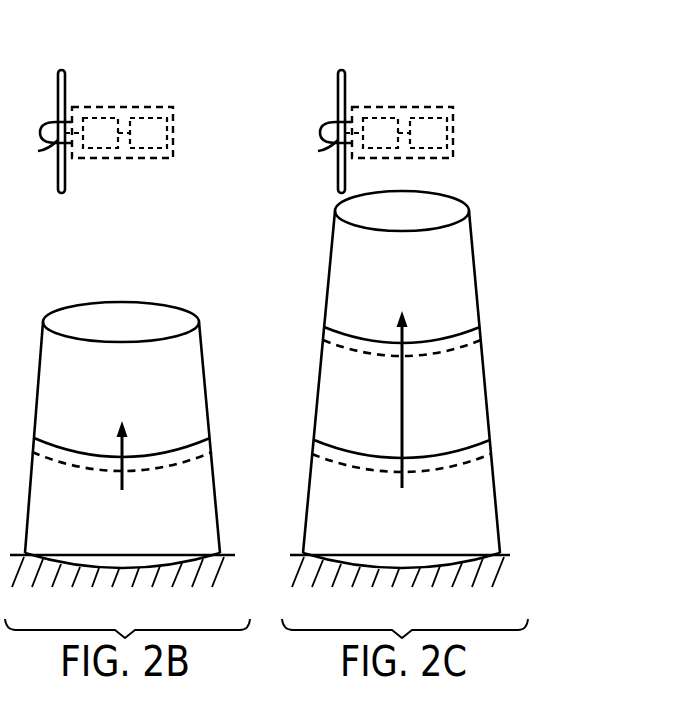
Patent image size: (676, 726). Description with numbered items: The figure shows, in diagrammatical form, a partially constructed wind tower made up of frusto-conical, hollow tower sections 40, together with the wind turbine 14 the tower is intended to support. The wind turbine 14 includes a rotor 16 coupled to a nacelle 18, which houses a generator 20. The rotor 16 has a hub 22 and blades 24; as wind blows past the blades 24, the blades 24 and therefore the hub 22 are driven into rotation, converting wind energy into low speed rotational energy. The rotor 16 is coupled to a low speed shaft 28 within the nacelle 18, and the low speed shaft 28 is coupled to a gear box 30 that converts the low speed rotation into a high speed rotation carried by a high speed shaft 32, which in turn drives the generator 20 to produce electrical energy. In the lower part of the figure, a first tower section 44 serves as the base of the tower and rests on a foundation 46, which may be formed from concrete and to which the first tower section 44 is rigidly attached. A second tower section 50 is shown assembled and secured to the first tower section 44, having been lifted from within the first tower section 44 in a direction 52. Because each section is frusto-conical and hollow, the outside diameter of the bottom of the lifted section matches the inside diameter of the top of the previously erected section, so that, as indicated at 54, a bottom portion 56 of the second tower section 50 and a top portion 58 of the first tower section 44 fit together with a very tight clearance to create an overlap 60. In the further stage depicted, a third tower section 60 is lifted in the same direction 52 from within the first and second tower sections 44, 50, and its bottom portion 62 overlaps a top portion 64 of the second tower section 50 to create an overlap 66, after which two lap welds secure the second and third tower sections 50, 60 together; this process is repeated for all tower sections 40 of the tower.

In FIG. 2B, the wind turbine 14 is at (143, 87).
In FIG. 2C, the wind turbine 14 is at (385, 114).
In FIG. 2B, the rotor 16 is at (33, 121).
In FIG. 2C, the rotor 16 is at (316, 102).
In FIG. 2B, the nacelle 18 is at (123, 106).
In FIG. 2C, the nacelle 18 is at (402, 96).
In FIG. 2B, the generator 20 is at (155, 108).
In FIG. 2C, the generator 20 is at (462, 98).
In FIG. 2B, the hub 22 is at (38, 151).
In FIG. 2C, the hub 22 is at (310, 153).
In FIG. 2B, the blades 24 is at (58, 76).
In FIG. 2C, the blades 24 is at (317, 117).
In FIG. 2B, the low speed shaft 28 is at (81, 120).
In FIG. 2C, the low speed shaft 28 is at (363, 99).
In FIG. 2B, the gear box 30 is at (100, 152).
In FIG. 2C, the gear box 30 is at (379, 154).
In FIG. 2B, the high speed shaft 32 is at (131, 150).
In FIG. 2C, the high speed shaft 32 is at (432, 153).
In FIG. 2B, the tower sections 40 is at (25, 474).
In FIG. 2C, the tower sections 40 is at (305, 475).
In FIG. 2B, the first tower section 44 is at (205, 489).
In FIG. 2C, the first tower section 44 is at (485, 490).
In FIG. 2B, the foundation 46 is at (222, 553).
In FIG. 2C, the foundation 46 is at (500, 553).
In FIG. 2B, the second tower section 50 is at (182, 378).
In FIG. 2C, the second tower section 50 is at (467, 376).
In FIG. 2B, the direction 52 is at (124, 488).
In FIG. 2C, the direction 52 is at (404, 410).
In FIG. 2B, the tight clearance fit 54 is at (216, 444).
In FIG. 2C, the tight clearance fit 54 is at (495, 445).
In FIG. 2B, the bottom portion 56 is at (87, 473).
In FIG. 2C, the bottom portion 56 is at (366, 472).
In FIG. 2B, the top portion 58 is at (78, 456).
In FIG. 2C, the top portion 58 is at (358, 455).
In FIG. 2B, the third tower section 60 is at (174, 456).
In FIG. 2C, the third tower section 60 is at (460, 258).
In FIG. 2C, the bottom portion 62 is at (350, 356).
In FIG. 2C, the top portion 64 is at (357, 340).
In FIG. 2C, the overlap 66 is at (451, 342).